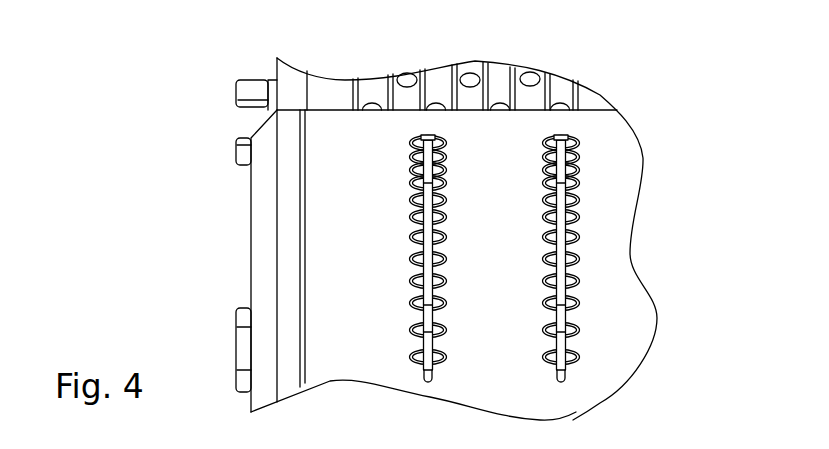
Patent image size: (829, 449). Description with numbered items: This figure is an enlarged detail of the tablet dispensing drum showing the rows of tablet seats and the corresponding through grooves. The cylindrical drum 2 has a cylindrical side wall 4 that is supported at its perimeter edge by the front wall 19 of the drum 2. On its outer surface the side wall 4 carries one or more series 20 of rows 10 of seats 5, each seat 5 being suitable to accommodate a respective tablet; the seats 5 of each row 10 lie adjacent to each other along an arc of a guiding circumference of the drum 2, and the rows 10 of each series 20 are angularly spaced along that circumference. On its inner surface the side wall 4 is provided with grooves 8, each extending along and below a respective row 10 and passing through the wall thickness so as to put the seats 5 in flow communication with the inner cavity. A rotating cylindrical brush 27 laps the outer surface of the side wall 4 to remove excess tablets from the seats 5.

The cylindrical drum 2 is at (200, 232).
The side wall 4 is at (620, 337).
The seat 5 is at (412, 198).
The groove 8 is at (412, 350).
The row of seats 10 is at (427, 412).
The front wall 19 is at (266, 212).
The series of rows of seats 20 is at (432, 112).
The rotating cylindrical brush 27 is at (530, 78).